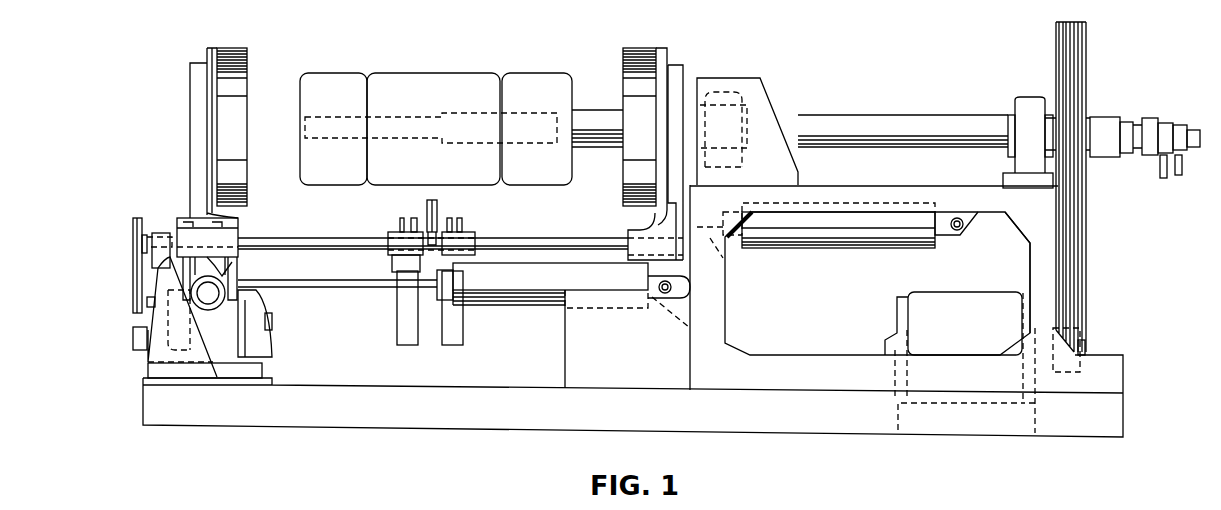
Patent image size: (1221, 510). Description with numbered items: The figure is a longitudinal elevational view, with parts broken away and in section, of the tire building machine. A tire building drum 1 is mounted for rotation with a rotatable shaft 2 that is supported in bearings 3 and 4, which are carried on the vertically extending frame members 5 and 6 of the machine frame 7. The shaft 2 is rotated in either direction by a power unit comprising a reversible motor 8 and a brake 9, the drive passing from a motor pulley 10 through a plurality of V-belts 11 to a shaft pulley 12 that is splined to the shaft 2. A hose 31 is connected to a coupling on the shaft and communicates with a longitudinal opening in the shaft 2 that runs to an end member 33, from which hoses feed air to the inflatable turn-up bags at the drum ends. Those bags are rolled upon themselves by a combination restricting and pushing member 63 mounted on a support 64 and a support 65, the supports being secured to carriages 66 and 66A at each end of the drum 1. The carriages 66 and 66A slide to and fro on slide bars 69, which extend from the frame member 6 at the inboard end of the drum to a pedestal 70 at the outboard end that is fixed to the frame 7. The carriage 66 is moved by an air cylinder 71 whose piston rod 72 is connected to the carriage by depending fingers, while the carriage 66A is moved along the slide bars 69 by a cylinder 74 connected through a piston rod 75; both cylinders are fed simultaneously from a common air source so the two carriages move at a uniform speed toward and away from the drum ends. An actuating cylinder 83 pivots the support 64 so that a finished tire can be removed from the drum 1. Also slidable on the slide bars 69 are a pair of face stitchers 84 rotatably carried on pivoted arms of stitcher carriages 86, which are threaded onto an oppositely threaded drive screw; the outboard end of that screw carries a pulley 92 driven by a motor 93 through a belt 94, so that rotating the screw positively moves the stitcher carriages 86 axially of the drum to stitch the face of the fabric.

The tire building drum 1 is at (430, 73).
The rotatable shaft 2 is at (512, 118).
The bearing 3 is at (1026, 98).
The bearing 4 is at (725, 92).
The vertically extending frame member 5 is at (1030, 268).
The vertically extending frame member 6 is at (722, 289).
The machine frame 7 is at (1126, 355).
The reversible motor 8 is at (918, 297).
The brake 9 is at (1028, 293).
The motor pulley 10 is at (1078, 332).
The V-belts 11 is at (1068, 274).
The shaft pulley 12 is at (1086, 72).
The hose 31 is at (1163, 176).
The end member 33 is at (305, 128).
The combination restricting and pushing member 63 is at (232, 50).
The support 64 is at (190, 161).
The support 65 is at (676, 68).
The carriage 66 is at (190, 222).
The carriage 66A is at (640, 236).
The slide bars 69 is at (346, 240).
The pedestal 70 is at (155, 279).
The air cylinder 71 is at (504, 298).
The piston rod 72 is at (331, 288).
The cylinder 74 is at (825, 246).
The piston rod 75 is at (724, 256).
The actuating cylinder 83 is at (214, 298).
The face stitchers 84 is at (438, 212).
The stitcher carriage 86 is at (404, 238).
The pulley 92 is at (133, 226).
The motor 93 is at (258, 304).
The belt 94 is at (142, 245).